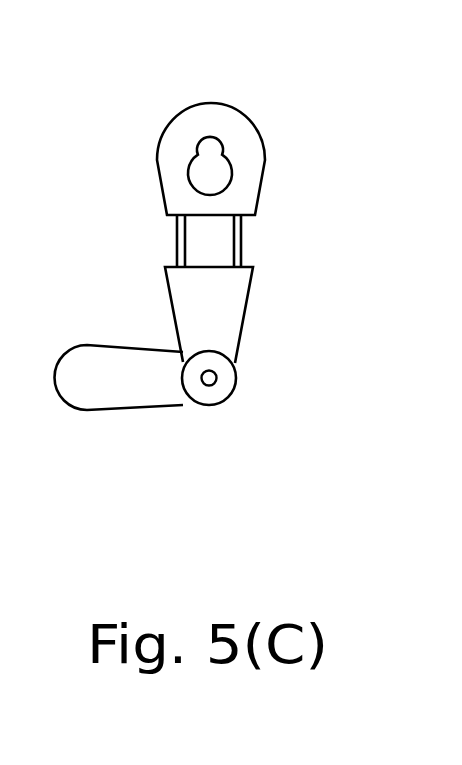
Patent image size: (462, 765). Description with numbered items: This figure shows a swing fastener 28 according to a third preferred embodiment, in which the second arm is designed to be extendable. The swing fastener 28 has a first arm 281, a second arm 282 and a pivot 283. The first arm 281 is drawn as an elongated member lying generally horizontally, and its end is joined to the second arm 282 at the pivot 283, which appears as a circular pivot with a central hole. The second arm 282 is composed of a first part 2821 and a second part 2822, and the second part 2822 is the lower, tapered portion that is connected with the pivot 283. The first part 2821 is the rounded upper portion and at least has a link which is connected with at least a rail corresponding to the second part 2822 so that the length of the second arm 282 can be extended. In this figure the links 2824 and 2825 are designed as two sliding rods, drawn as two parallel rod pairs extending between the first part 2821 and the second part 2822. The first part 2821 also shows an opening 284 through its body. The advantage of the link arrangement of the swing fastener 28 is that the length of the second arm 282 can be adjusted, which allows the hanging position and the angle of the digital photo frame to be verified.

The swing fastener 28 is at (222, 73).
The first arm 281 is at (150, 410).
The second arm 282 is at (368, 138).
The first part 2821 is at (158, 173).
The second part 2822 is at (247, 297).
The link 2824 is at (177, 233).
The link 2825 is at (242, 237).
The pivot 283 is at (237, 373).
The keyhole opening 284 is at (202, 170).